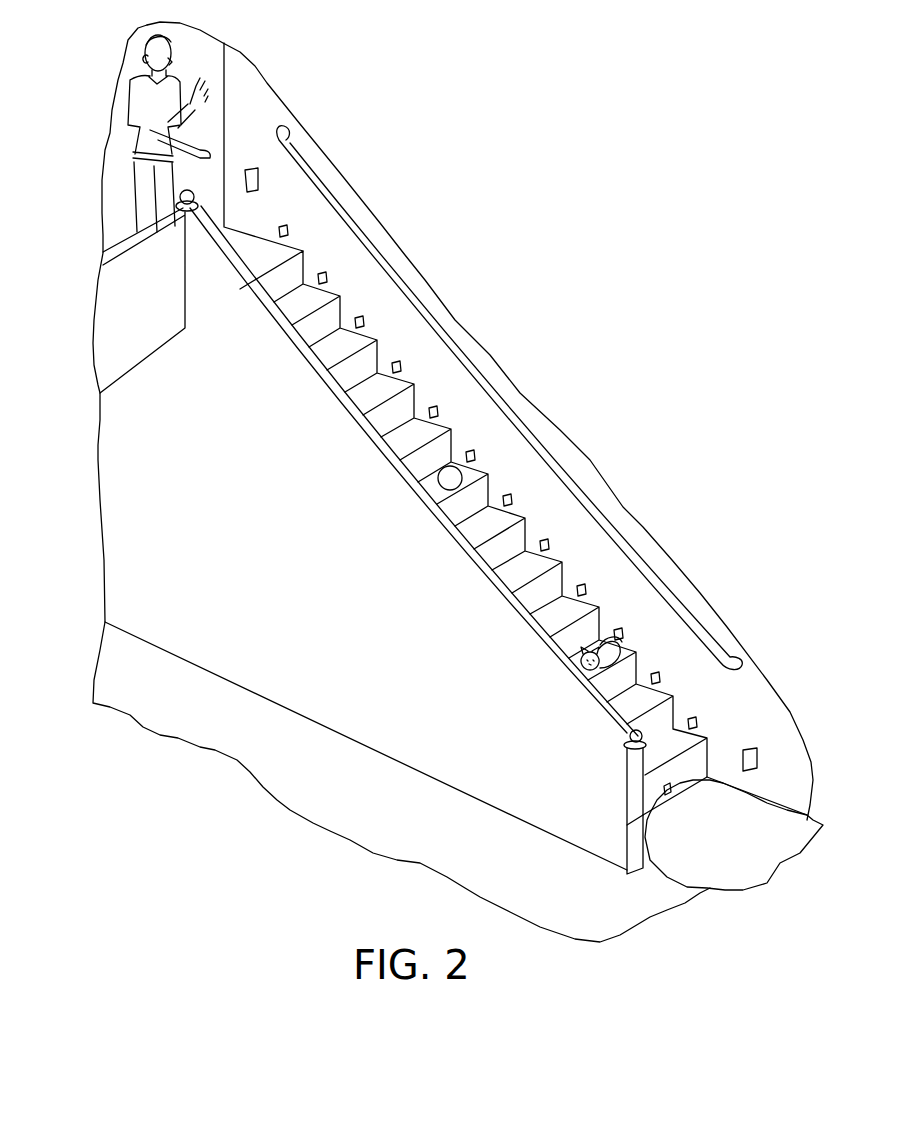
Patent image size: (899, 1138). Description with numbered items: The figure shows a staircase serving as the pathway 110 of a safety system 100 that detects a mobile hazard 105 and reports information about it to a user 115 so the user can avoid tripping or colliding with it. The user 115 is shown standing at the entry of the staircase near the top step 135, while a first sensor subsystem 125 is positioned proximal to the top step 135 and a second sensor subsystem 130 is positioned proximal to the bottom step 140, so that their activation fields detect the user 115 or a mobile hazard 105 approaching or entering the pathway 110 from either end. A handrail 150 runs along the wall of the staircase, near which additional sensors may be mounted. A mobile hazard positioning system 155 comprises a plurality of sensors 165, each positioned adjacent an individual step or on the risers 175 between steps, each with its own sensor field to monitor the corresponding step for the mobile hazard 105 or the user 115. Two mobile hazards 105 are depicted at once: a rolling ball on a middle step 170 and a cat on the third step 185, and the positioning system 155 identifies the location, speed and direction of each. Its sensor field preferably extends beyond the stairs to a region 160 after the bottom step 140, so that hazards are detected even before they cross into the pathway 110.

The safety system 100 is at (635, 173).
The mobile hazard 105 is at (473, 577).
The pathway 110 is at (718, 855).
The user 115 is at (130, 92).
The first sensor subsystem 125 is at (250, 172).
The second sensor subsystem 130 is at (748, 752).
The top step 135 is at (243, 283).
The bottom step 140 is at (667, 757).
The handrail 150 is at (290, 148).
The mobile hazard positioning system 155 is at (264, 356).
The region after the bottom step 160 is at (750, 820).
The sensors 165 is at (280, 233).
The middle step 170 is at (442, 497).
The risers 175 is at (653, 797).
The third step 185 is at (617, 663).